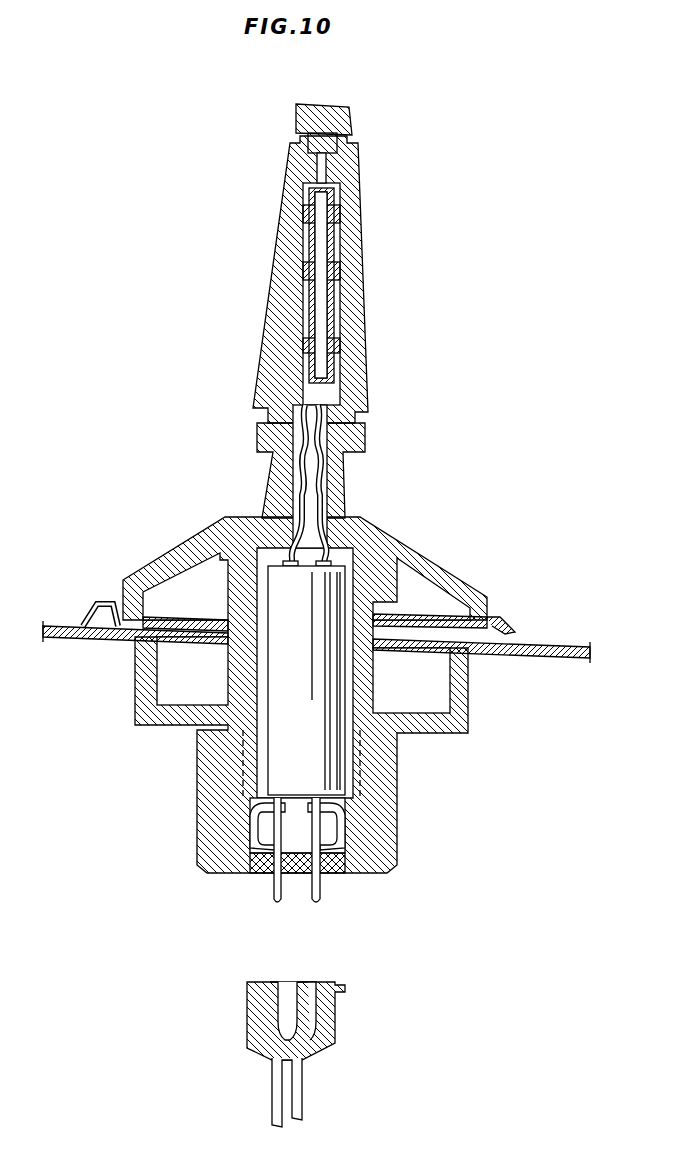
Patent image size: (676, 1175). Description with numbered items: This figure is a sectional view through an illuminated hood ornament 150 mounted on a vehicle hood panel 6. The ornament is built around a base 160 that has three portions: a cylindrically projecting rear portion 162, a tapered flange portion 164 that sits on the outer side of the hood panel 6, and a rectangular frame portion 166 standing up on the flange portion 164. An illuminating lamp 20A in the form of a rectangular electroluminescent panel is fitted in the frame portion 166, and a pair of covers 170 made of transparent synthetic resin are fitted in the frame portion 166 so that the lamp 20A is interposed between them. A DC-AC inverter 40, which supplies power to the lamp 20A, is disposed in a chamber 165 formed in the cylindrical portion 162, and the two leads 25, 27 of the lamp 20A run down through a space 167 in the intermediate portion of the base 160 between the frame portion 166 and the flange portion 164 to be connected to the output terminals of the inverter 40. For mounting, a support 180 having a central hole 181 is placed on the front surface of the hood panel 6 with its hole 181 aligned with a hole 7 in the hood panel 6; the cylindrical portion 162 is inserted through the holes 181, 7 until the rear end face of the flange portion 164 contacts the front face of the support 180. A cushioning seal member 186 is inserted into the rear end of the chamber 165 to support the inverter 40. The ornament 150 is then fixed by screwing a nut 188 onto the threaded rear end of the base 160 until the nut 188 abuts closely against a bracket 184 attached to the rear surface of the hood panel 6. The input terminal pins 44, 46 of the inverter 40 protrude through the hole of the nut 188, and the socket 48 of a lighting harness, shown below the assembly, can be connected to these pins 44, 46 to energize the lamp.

The hood panel 6 is at (52, 626).
The hole 7 is at (232, 640).
The illuminating lamp 20A is at (322, 288).
The lead 25 is at (298, 466).
The lead 27 is at (326, 478).
The DC-AC inverter 40 is at (303, 677).
The input terminal pin 44 is at (268, 885).
The input terminal pin 46 is at (312, 906).
The socket 48 is at (325, 1043).
The hood ornament 150 is at (378, 408).
The base 160 is at (222, 675).
The cylindrically projecting rear portion 162 is at (385, 735).
The tapered flange portion 164 is at (452, 578).
The chamber 165 is at (253, 555).
The rectangular frame portion 166 is at (352, 115).
The space 167 is at (366, 431).
The cover 170 is at (360, 205).
The support 180 is at (86, 614).
The central hole 181 is at (228, 627).
The bracket 184 is at (141, 703).
The cushioning seal member 186 is at (340, 866).
The nut 188 is at (205, 832).